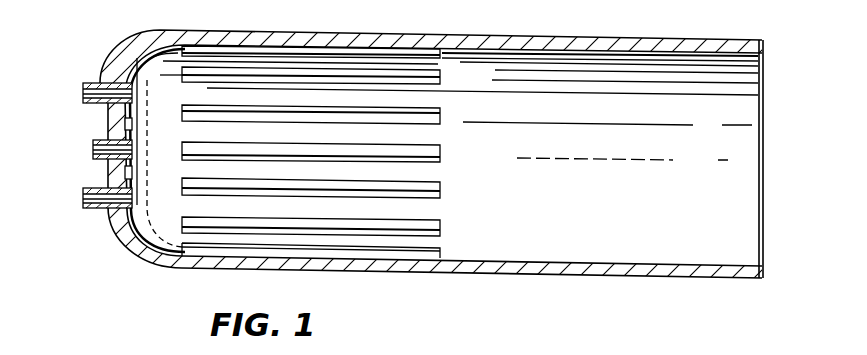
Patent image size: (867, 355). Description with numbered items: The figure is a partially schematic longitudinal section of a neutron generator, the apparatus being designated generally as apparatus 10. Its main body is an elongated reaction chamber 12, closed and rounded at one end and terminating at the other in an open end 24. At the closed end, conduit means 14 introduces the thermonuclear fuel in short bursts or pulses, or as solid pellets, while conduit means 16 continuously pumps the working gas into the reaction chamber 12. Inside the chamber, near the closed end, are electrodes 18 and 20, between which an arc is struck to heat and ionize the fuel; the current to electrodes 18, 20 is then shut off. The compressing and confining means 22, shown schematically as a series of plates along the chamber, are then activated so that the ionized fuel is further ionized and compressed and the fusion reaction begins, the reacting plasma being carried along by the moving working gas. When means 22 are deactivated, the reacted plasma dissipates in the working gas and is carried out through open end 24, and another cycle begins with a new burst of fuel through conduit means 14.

The apparatus 10 is at (473, 271).
The reaction chamber 12 is at (224, 205).
The conduit means 14 is at (93, 160).
The conduit means 16 is at (97, 83).
The electrode 18 is at (133, 126).
The electrode 20 is at (133, 174).
The compressing and confining means 22 is at (440, 57).
The open end 24 is at (763, 83).